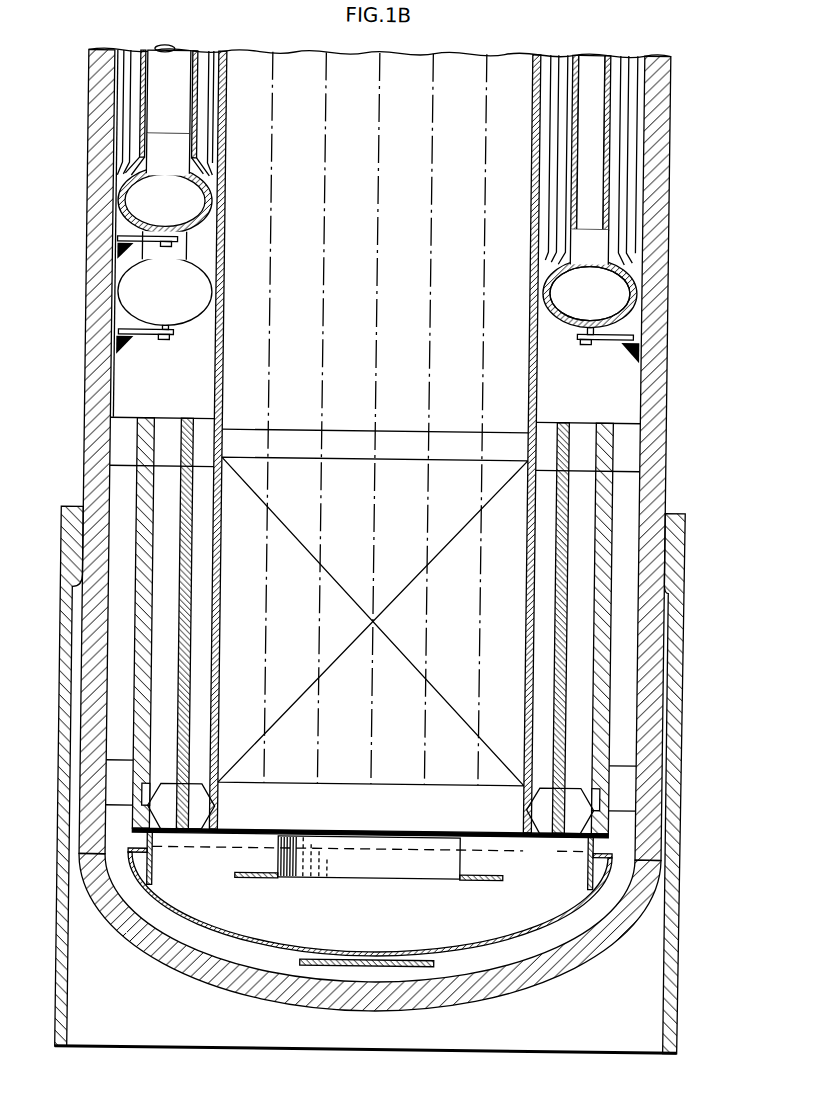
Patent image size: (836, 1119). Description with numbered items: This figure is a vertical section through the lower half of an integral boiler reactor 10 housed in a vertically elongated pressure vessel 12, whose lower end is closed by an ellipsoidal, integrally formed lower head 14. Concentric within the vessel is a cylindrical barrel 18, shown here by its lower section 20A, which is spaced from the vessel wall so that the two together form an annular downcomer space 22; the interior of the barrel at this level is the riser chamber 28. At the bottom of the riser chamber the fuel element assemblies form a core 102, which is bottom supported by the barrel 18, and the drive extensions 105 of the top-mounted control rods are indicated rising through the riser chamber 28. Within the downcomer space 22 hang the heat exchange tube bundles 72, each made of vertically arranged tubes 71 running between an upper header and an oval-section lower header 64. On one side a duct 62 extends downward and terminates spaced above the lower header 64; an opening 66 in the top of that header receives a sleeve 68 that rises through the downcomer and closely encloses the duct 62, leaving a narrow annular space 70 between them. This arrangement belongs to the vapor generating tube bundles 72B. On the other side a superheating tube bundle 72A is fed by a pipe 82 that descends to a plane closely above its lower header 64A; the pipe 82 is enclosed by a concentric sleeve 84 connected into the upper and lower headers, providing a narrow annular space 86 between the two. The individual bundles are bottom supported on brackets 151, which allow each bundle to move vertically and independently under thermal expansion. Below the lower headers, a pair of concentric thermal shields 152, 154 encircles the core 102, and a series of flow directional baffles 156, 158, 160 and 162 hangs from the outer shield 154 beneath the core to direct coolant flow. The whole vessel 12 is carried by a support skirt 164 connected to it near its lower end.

The integral boiler reactor 10 is at (676, 452).
The pressure vessel 12 is at (668, 385).
The lower head 14 is at (514, 990).
The barrel 18 is at (541, 376).
The lower section of the barrel 20A is at (528, 338).
The downcomer space 22 is at (171, 375).
The riser chamber 28 is at (389, 166).
The duct 62 is at (588, 76).
The lower header 64 is at (198, 299).
The lower header 64A is at (204, 215).
The opening 66 is at (592, 270).
The sleeve 68 is at (570, 258).
The annular space 70 is at (607, 76).
The tubes 71 is at (555, 76).
The tube bundles 72 is at (545, 173).
The superheating tube bundles 72A is at (208, 134).
The vapor generating tube bundles 72B is at (546, 141).
The pipe 82 is at (166, 54).
The sleeve 84 is at (188, 64).
The annular space 86 is at (144, 52).
The core 102 is at (407, 476).
The drive extensions 105 is at (322, 301).
The brackets 151 is at (128, 251).
The thermal shield 152 is at (186, 421).
The thermal shield 154 is at (142, 420).
The flow directional baffle 156 is at (592, 870).
The flow directional baffle 158 is at (556, 920).
The flow directional baffle 160 is at (394, 959).
The flow directional baffle 162 is at (462, 867).
The support skirt 164 is at (684, 826).